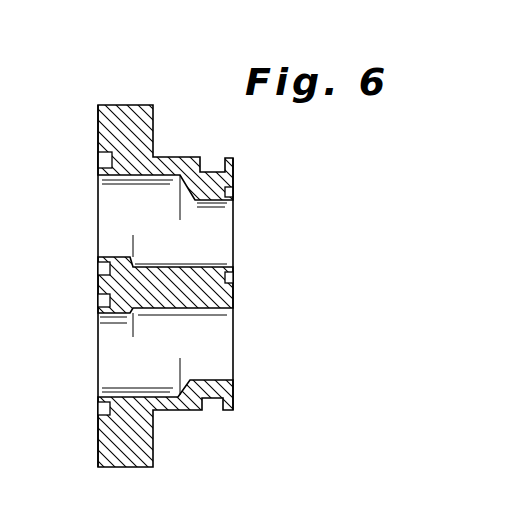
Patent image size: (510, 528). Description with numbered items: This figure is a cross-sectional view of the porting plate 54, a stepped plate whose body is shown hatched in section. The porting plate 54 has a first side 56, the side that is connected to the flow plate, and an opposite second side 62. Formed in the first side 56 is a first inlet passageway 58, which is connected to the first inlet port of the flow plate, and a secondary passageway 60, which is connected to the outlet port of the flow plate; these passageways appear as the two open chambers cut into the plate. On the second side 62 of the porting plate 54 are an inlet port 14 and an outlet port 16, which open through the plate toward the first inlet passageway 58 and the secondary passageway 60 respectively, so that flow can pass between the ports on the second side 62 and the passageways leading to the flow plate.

The inlet port 14 is at (108, 215).
The outlet port 16 is at (103, 362).
The porting plate 54 is at (125, 105).
The first side 56 is at (235, 176).
The first inlet passageway 58 is at (220, 223).
The secondary passageway 60 is at (220, 328).
The second side 62 is at (98, 118).